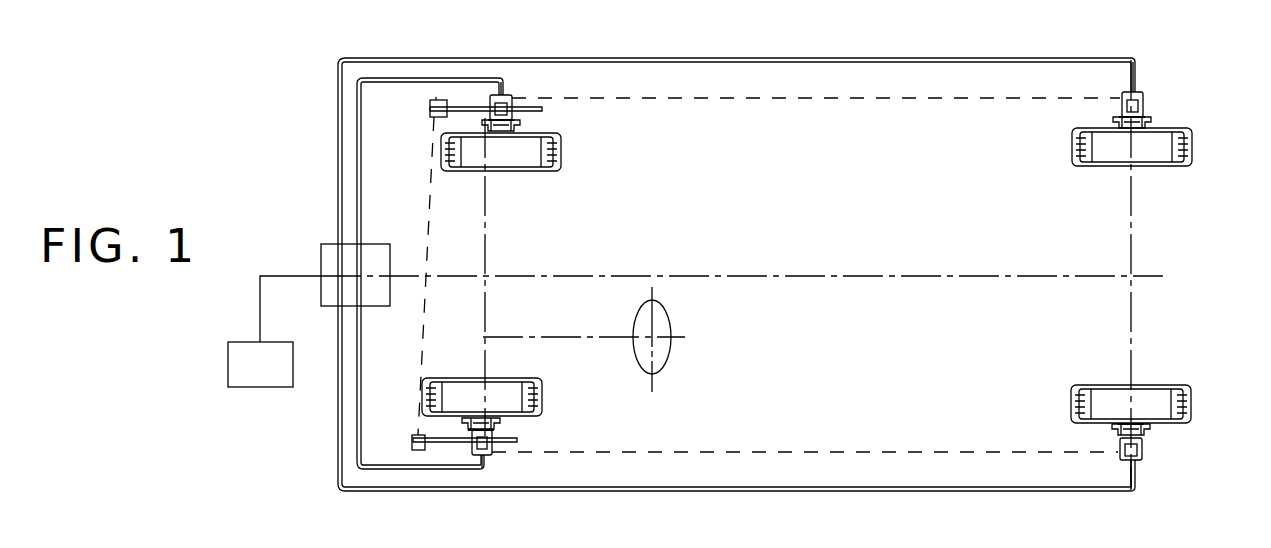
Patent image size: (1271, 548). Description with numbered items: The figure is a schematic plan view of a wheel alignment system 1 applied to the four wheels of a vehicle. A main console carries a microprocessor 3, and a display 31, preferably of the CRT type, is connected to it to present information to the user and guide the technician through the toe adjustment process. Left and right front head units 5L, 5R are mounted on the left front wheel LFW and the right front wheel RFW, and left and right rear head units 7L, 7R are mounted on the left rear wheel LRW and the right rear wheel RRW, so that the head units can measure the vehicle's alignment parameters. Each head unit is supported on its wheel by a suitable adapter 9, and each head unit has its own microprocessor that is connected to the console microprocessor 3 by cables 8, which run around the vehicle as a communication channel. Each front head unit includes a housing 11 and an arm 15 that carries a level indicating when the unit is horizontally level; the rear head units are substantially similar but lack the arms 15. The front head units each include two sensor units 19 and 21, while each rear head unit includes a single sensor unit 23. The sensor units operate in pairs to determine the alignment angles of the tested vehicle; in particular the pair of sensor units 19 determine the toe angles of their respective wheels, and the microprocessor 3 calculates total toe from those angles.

The wheel alignment system 1 is at (888, 46).
The microprocessor 3 is at (333, 255).
The display 31 is at (270, 372).
The cables 8 is at (726, 58).
The adapters 9 is at (437, 127).
The housing 11 is at (490, 446).
The arm 15 is at (475, 107).
The sensor unit 19 is at (437, 100).
The sensor unit 21 is at (505, 97).
The sensor unit 23 is at (1128, 97).
The right front head unit 5R is at (530, 118).
The left front head unit 5L is at (515, 431).
The right rear head unit 7R is at (1170, 113).
The left rear head unit 7L is at (1165, 440).
The right front wheel RFW is at (565, 152).
The left front wheel LFW is at (545, 392).
The right rear wheel RRW is at (1080, 150).
The left rear wheel LRW is at (1080, 405).